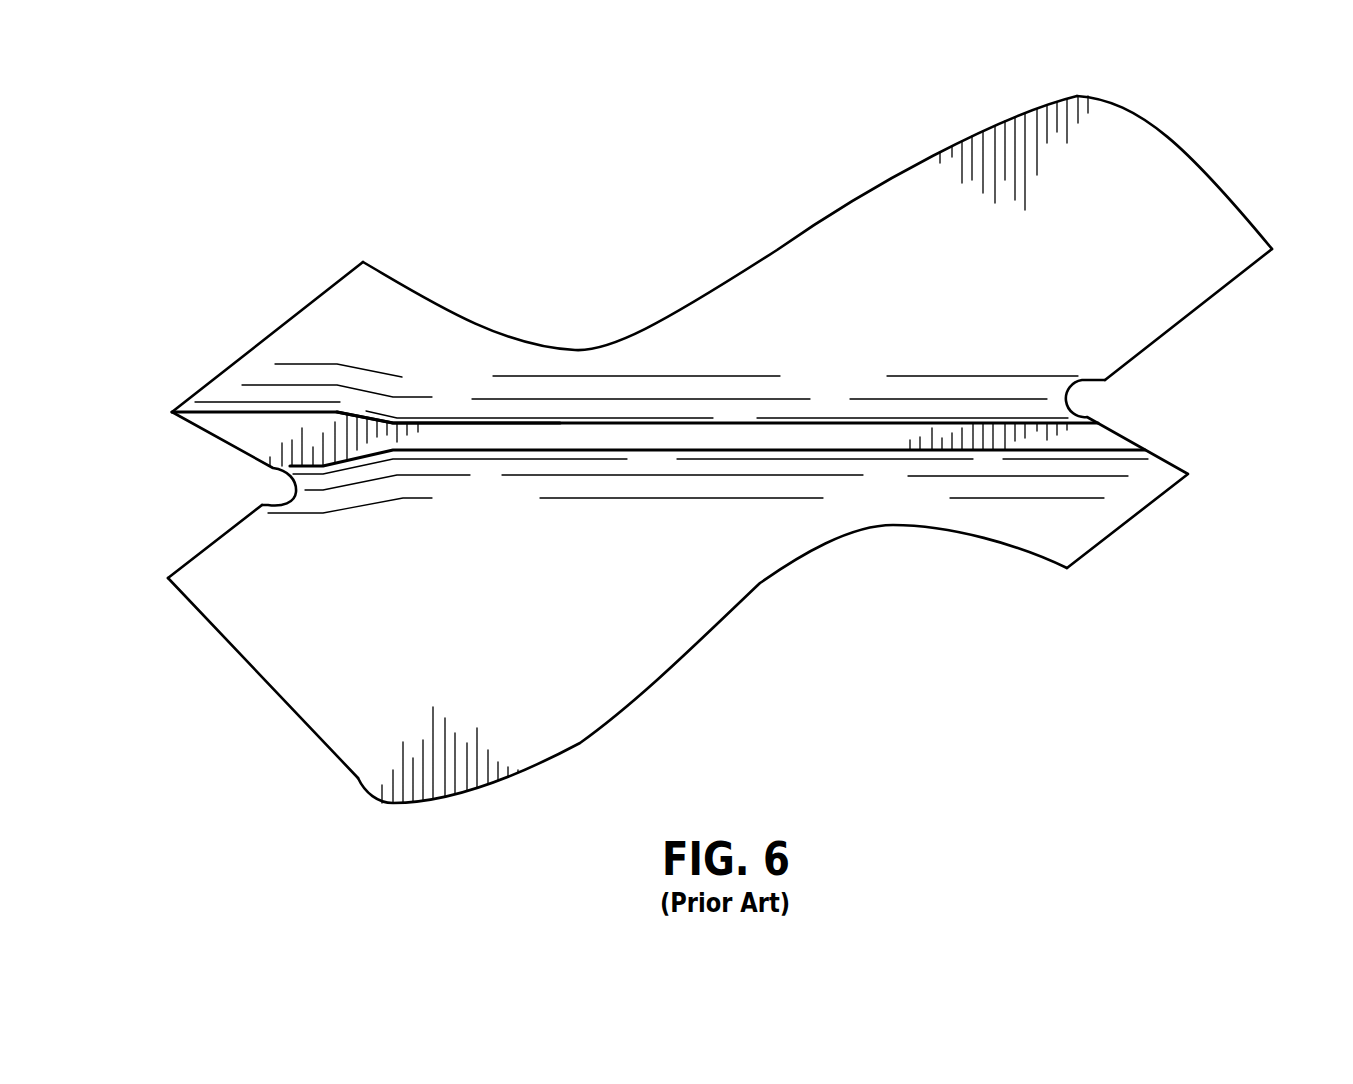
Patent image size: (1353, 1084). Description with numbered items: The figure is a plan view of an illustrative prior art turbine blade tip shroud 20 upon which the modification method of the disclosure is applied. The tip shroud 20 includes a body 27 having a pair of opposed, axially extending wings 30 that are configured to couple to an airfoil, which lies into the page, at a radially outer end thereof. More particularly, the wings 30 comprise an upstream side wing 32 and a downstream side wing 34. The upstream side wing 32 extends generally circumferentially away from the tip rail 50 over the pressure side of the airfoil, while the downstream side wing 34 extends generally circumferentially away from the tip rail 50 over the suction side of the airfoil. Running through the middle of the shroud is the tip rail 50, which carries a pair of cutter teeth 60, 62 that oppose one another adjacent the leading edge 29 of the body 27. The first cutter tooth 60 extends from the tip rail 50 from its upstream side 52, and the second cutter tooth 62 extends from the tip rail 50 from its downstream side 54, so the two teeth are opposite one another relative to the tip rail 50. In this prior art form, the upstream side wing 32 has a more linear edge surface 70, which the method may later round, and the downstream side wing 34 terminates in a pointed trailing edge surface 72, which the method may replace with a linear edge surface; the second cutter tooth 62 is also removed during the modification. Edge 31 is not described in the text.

The tip shroud 20 is at (701, 440).
The body 27 is at (773, 225).
The leading edge 29 is at (176, 543).
The wings 30 is at (723, 442).
The trailing edge 31 is at (1240, 316).
The upstream side wing 32 is at (587, 697).
The downstream side wing 34 is at (952, 212).
The tip rail 50 is at (607, 437).
The upstream side 52 is at (562, 467).
The downstream side 54 is at (513, 428).
The first cutter tooth 60 is at (298, 463).
The second cutter tooth 62 is at (259, 422).
The edge surface 70 is at (232, 647).
The pointed trailing edge surface 72 is at (1280, 212).